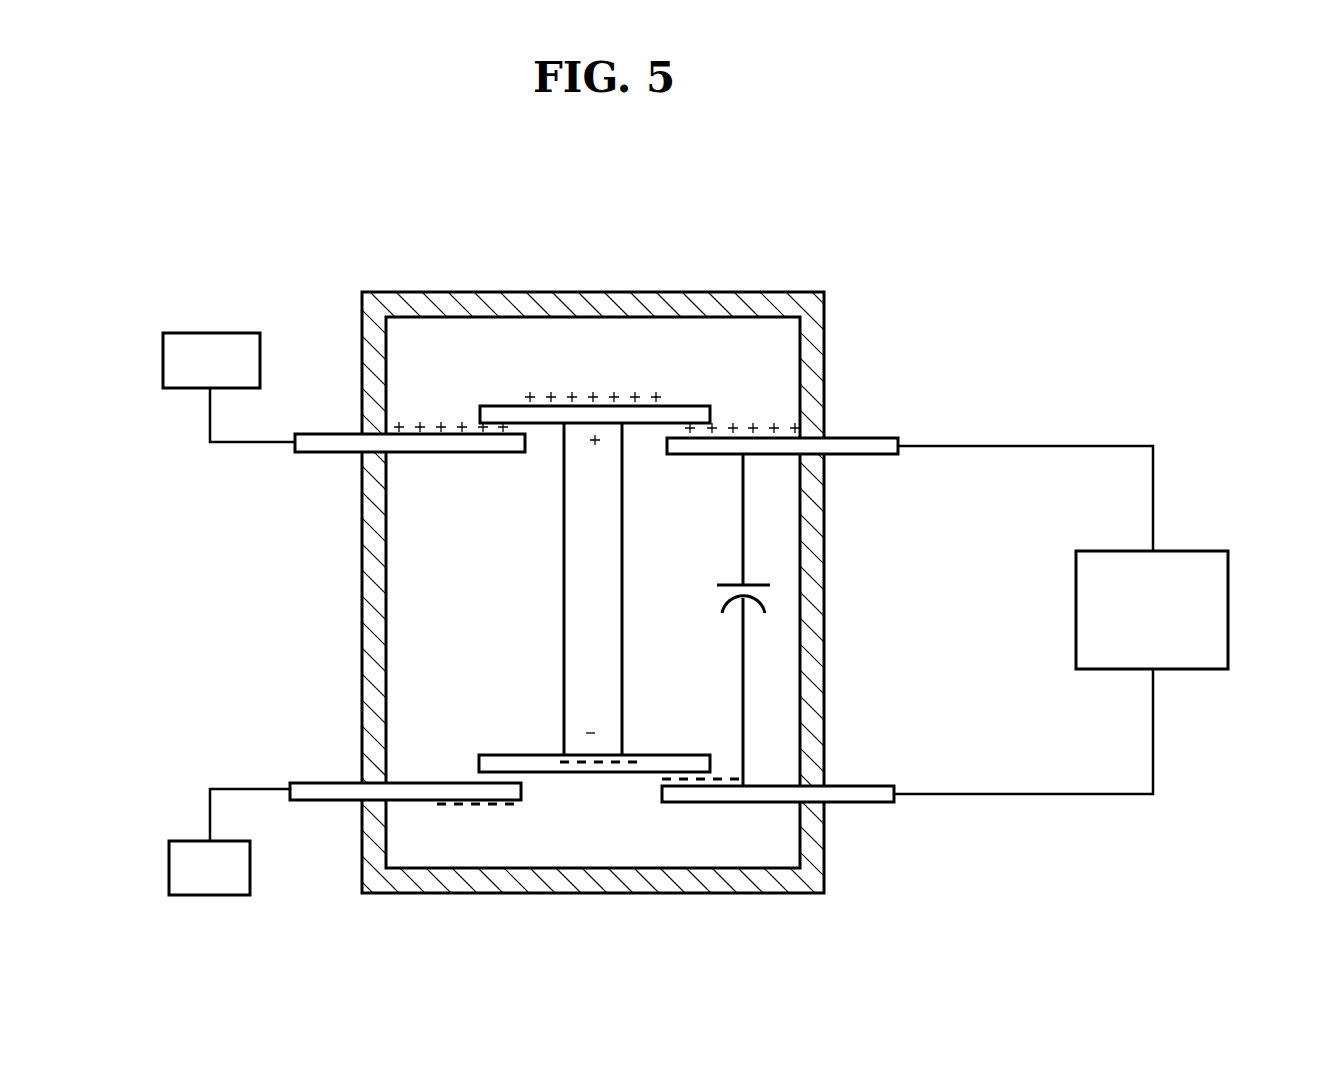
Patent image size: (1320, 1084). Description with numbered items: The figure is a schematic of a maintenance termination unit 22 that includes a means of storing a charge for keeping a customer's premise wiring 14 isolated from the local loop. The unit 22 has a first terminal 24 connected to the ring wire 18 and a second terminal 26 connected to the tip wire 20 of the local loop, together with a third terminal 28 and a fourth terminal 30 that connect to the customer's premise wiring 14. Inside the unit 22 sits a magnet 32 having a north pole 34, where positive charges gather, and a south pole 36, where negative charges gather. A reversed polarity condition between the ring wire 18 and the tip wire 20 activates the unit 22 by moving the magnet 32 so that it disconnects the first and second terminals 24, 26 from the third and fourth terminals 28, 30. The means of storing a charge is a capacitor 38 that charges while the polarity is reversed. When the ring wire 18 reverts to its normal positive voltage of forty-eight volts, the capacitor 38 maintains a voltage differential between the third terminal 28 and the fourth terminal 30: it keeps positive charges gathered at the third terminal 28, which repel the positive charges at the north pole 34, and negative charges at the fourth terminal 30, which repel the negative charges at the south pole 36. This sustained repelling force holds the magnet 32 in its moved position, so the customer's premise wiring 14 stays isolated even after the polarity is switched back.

The customer's premise wiring 14 is at (1215, 551).
The ring wire 18 is at (173, 333).
The tip wire 20 is at (180, 895).
The maintenance termination unit 22 is at (780, 292).
The first terminal 24 is at (312, 452).
The second terminal 26 is at (308, 783).
The third terminal 28 is at (885, 438).
The fourth terminal 30 is at (880, 786).
The magnet 32 is at (578, 579).
The north pole 34 is at (585, 455).
The south pole 36 is at (580, 720).
The capacitor 38 is at (772, 586).